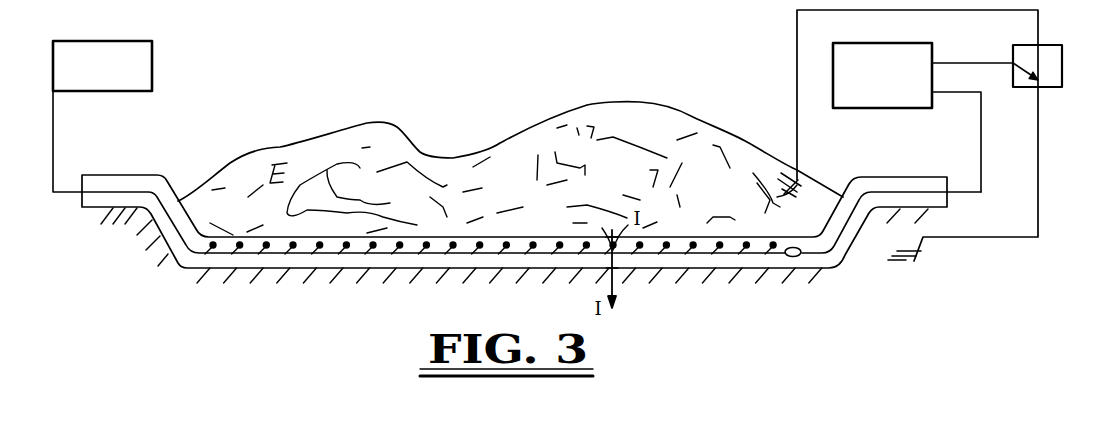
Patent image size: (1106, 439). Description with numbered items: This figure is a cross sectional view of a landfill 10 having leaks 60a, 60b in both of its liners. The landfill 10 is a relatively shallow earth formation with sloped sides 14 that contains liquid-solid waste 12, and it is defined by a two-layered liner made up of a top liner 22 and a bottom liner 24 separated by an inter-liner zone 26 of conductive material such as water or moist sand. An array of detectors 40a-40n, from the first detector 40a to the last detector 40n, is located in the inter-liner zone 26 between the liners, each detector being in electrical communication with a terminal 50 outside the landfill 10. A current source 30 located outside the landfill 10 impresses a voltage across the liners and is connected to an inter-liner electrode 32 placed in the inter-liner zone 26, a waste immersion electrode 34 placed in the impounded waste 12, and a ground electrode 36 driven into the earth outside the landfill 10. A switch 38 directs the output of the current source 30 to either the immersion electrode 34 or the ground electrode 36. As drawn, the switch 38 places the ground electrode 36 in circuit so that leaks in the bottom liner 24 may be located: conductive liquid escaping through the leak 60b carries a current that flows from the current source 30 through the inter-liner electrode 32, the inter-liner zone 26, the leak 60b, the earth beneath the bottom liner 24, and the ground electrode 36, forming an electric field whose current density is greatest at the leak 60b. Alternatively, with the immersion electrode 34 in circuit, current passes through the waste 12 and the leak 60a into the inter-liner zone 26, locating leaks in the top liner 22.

The landfill 10 is at (501, 139).
The liquid-solid waste 12 is at (604, 182).
The sloped sides 14 is at (531, 221).
The top liner 22 is at (121, 175).
The bottom liner 24 is at (113, 208).
The inter-liner zone 26 is at (189, 266).
The current source 30 is at (897, 110).
The inter-liner electrode 32 is at (794, 258).
The waste immersion electrode 34 is at (800, 178).
The ground electrode 36 is at (925, 257).
The switch 38 is at (1063, 80).
The array of detectors 40a-40n is at (490, 277).
The detector 40a is at (210, 248).
The detector 40n is at (770, 248).
The terminal 50 is at (152, 67).
The leak 60a is at (614, 239).
The leak 60b is at (615, 268).